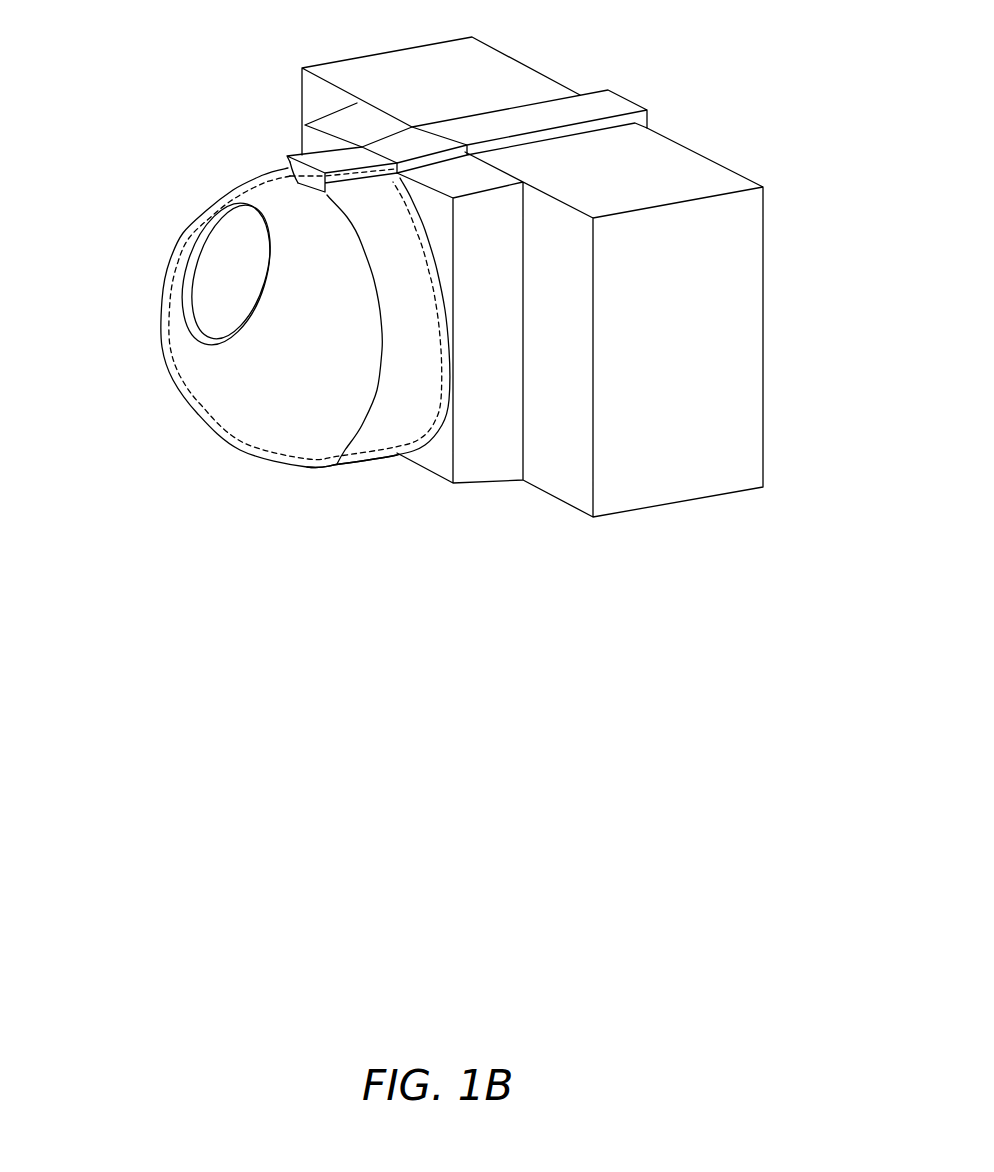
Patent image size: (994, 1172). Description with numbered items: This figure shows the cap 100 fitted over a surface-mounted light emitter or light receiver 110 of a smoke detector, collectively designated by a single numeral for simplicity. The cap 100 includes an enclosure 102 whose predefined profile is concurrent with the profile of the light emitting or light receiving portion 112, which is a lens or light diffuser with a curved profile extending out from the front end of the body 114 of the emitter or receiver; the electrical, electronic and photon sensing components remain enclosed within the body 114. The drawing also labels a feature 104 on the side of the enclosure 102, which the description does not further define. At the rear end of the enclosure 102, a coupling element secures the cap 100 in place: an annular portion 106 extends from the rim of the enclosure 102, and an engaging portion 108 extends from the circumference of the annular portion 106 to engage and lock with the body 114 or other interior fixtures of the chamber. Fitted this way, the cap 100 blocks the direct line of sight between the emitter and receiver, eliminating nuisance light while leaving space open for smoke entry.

The cap 100 is at (146, 359).
The enclosure 102 is at (168, 260).
The sensor window 104 is at (237, 243).
The annular portion 106 is at (388, 435).
The engaging portion 108 is at (585, 110).
The light emitter or light receiver 110 is at (729, 127).
The light emitting or light receiving portion 112 is at (270, 182).
The body 114 is at (465, 80).